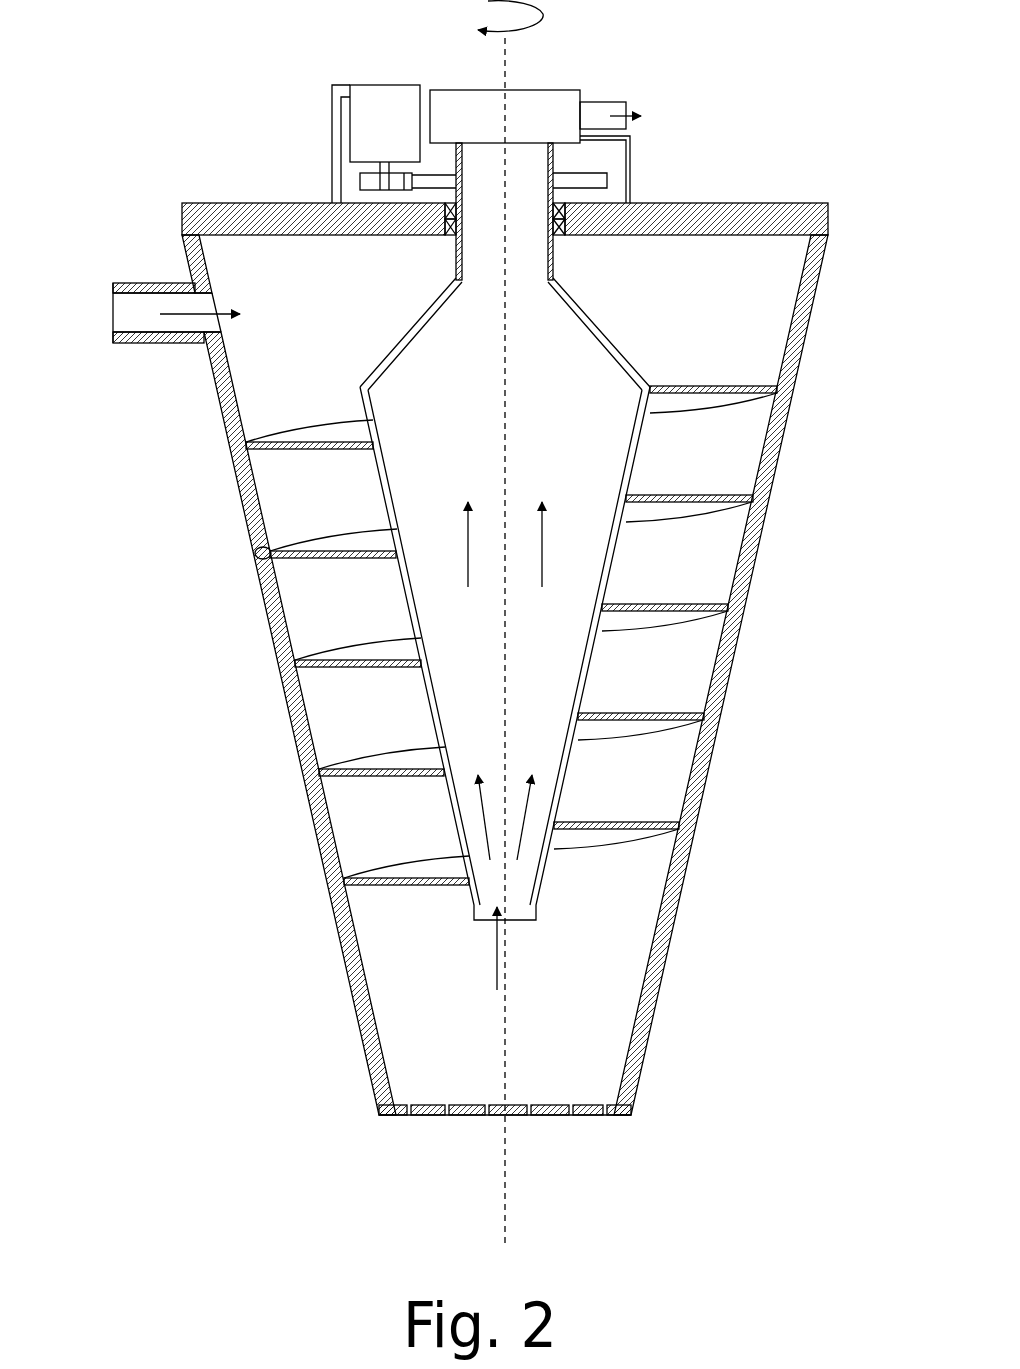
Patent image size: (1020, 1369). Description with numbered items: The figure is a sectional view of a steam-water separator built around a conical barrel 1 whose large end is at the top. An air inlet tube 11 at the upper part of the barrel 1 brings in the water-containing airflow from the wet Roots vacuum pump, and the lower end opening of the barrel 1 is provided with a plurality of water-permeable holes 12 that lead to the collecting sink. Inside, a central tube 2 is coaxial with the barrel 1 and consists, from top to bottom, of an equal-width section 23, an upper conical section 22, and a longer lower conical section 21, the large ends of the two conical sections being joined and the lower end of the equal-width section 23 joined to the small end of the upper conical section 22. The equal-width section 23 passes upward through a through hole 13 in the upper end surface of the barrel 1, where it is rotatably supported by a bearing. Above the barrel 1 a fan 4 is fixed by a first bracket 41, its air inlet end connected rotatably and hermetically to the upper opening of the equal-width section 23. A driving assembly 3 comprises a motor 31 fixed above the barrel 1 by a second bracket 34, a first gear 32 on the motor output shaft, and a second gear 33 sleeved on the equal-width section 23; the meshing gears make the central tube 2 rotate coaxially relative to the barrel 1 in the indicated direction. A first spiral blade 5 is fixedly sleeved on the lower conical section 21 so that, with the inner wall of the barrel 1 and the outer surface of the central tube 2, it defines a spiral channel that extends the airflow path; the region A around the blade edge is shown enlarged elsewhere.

The barrel 1 is at (272, 622).
The air inlet tube 11 is at (137, 283).
The water-permeable holes 12 is at (408, 1115).
The through hole 13 is at (569, 220).
The central tube 2 is at (624, 551).
The lower conical section 21 is at (587, 677).
The upper conical section 22 is at (618, 352).
The equal-width section 23 is at (555, 251).
The driving assembly 3 is at (420, 113).
The motor 31 is at (385, 97).
The first gear 32 is at (373, 182).
The second gear 33 is at (427, 185).
The second bracket 34 is at (337, 150).
The fan 4 is at (538, 112).
The first bracket 41 is at (632, 170).
The first spiral blade 5 is at (703, 497).
The region A is at (255, 553).